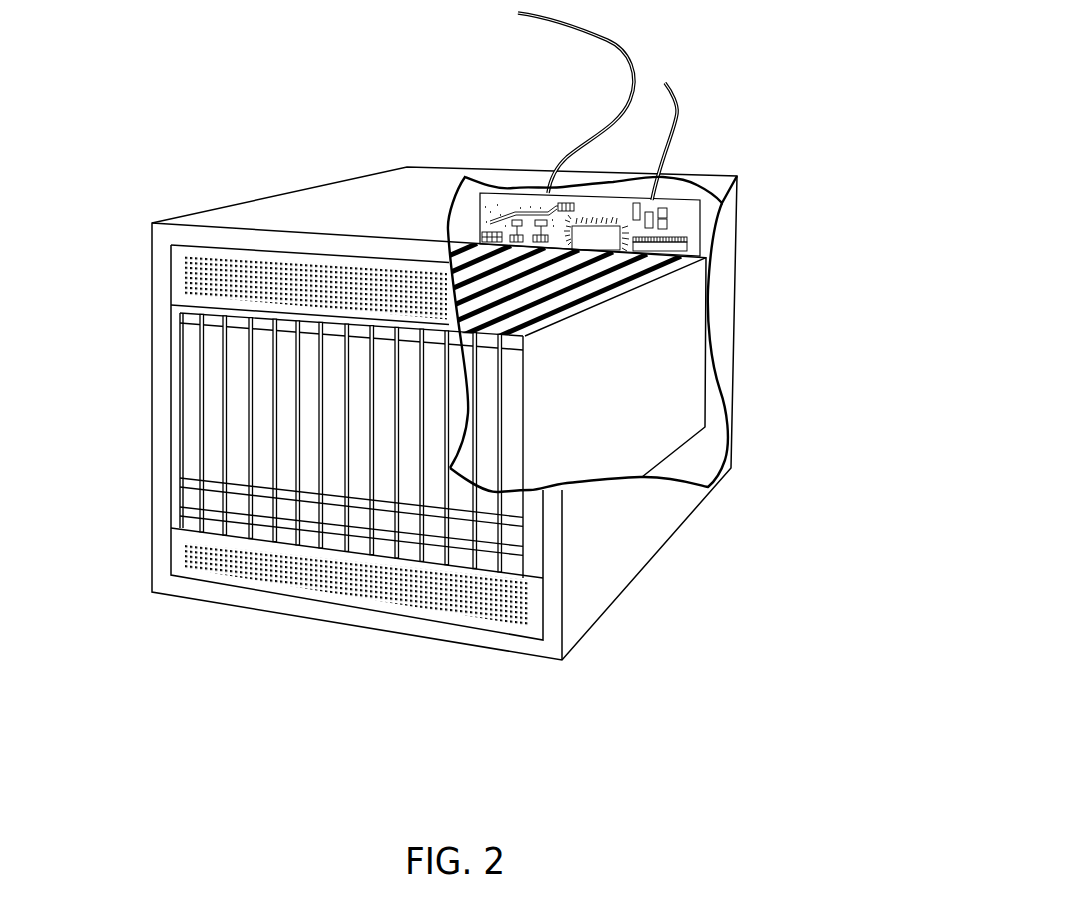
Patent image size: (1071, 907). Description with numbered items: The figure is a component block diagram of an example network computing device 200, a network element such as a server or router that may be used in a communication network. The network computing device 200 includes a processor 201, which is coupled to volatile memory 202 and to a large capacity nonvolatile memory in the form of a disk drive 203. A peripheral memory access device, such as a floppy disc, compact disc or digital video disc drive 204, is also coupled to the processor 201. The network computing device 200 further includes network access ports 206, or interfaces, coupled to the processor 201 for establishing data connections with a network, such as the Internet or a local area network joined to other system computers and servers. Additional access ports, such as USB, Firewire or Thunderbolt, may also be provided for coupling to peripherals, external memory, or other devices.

The network computing device 200 is at (91, 139).
The processor 201 is at (585, 235).
The volatile memory 202 is at (685, 250).
The disk drive 203 is at (238, 372).
The compact disc (CD) or digital video disc (DVD) drive 204 is at (212, 437).
The network access ports 206 is at (603, 35).